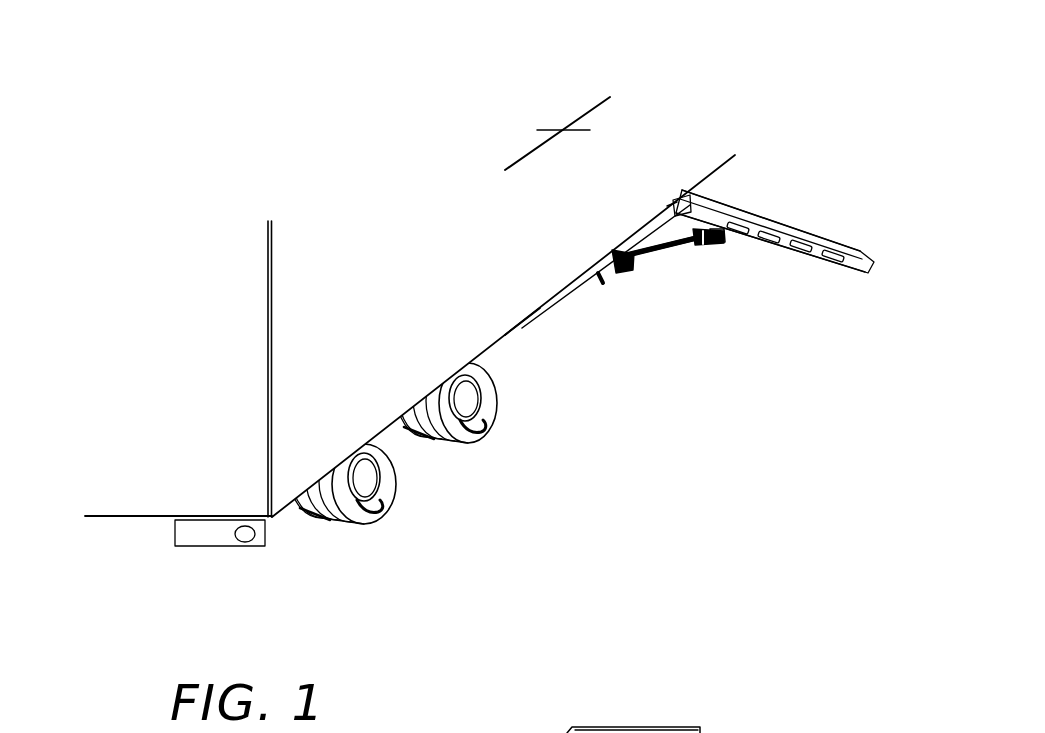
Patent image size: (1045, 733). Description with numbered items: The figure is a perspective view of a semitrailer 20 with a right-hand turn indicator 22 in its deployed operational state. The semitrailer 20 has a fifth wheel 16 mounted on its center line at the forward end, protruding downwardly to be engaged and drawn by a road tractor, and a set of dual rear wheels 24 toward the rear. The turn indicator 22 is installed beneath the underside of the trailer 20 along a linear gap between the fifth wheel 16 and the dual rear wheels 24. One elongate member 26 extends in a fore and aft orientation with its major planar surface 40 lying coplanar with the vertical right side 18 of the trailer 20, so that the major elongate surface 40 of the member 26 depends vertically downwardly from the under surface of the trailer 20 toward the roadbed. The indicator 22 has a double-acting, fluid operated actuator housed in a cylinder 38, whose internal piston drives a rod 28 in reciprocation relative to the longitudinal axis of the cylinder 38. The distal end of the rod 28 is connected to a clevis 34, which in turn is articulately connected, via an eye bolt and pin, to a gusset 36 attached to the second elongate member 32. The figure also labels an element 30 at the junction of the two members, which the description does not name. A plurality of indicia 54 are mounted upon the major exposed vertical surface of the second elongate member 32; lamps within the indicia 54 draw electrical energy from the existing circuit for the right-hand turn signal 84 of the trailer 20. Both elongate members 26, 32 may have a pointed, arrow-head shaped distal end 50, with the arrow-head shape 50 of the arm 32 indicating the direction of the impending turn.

The fifth wheel 16 is at (593, 108).
The vertical right side 18 is at (446, 237).
The semitrailer 20 is at (461, 97).
The right-hand turn indicator 22 is at (739, 333).
The dual rear wheels 24 is at (378, 521).
The elongate member 26 is at (603, 285).
The rod 28 is at (673, 254).
The hinge 30 is at (714, 196).
The second elongate member 32 is at (774, 216).
The clevis 34 is at (718, 244).
The gusset 36 is at (733, 236).
The cylinder 38 is at (632, 274).
The major planar surface 40 is at (538, 318).
The arrow-head shaped distal end 50 is at (854, 244).
The indicia 54 is at (803, 246).
The right-hand turn signal 84 is at (248, 543).